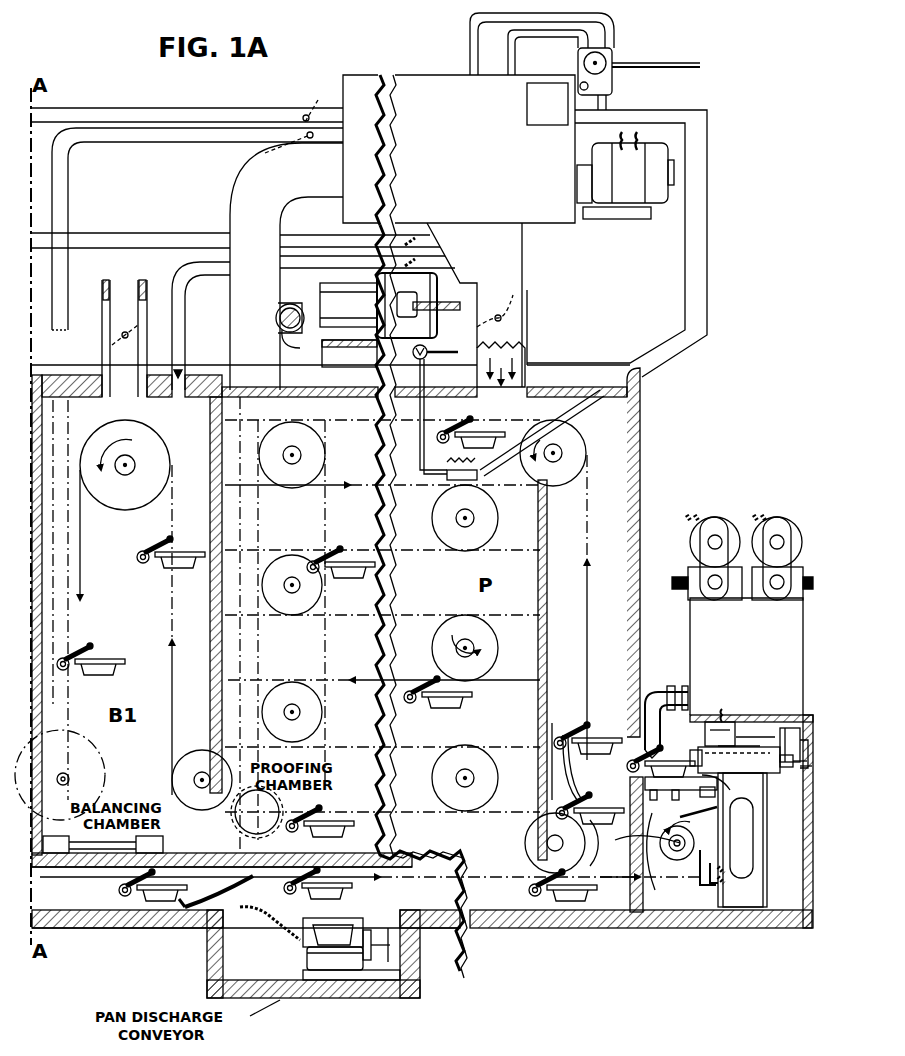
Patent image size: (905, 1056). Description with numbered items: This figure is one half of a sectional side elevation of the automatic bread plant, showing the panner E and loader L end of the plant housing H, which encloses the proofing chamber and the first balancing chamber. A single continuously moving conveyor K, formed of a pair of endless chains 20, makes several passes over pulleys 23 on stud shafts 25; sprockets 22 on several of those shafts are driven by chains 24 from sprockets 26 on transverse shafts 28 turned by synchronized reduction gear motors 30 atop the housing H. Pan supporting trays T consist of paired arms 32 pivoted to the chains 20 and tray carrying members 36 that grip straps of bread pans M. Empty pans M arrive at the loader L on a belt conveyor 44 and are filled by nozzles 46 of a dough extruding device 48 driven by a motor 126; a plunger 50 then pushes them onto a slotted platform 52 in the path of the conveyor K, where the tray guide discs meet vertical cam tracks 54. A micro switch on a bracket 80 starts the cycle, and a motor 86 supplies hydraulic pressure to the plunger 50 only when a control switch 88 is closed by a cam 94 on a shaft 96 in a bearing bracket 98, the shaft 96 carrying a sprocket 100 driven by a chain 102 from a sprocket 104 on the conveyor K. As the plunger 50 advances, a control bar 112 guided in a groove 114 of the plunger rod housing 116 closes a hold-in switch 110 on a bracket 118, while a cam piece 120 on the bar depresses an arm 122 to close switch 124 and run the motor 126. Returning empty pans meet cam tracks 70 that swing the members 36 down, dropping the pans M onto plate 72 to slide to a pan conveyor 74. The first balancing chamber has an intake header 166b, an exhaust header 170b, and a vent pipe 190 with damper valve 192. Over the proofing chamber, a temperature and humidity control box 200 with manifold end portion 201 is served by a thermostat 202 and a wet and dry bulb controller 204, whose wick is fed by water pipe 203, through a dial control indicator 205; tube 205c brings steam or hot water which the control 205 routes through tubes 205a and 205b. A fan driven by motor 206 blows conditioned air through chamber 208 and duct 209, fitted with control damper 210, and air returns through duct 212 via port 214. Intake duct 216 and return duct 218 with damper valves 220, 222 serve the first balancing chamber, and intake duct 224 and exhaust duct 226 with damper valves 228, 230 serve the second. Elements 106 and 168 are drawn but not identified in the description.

The endless chains 20 is at (80, 528).
The sprockets 22 is at (305, 486).
The pulleys 23 is at (320, 448).
The chains 24 is at (310, 525).
The stud shafts 25 is at (288, 460).
The sprockets 26 is at (280, 338).
The horizontal transverse shafts 28 is at (276, 314).
The synchronized reduction gear motors 30 is at (345, 310).
The arms 32 is at (165, 550).
The tray carrying members 36 is at (182, 568).
The belt conveyor 44 is at (635, 840).
The nozzles 46 is at (650, 712).
The dough extruding device 48 is at (712, 612).
The plunger 50 is at (690, 758).
The slotted platform 52 is at (585, 815).
The vertical cam tracks 54 is at (560, 735).
The stationary cam tracks 70 is at (205, 900).
The plate 72 is at (270, 915).
The pan conveyor 74 is at (345, 955).
The bracket 80 is at (681, 802).
The motor 86 is at (782, 528).
The control switch 88 is at (712, 890).
The cam 94 is at (766, 832).
The shaft 96 is at (679, 860).
The bearing bracket 98 is at (692, 870).
The sprocket 100 is at (664, 860).
The chain 102 is at (630, 862).
The sprocket 104 is at (545, 830).
The sprocket 106 is at (547, 843).
The hold-in switch 110 is at (790, 774).
The control bar 112 is at (712, 722).
The longitudinal groove 114 is at (722, 760).
The plunger rod housing 116 is at (767, 795).
The bracket 118 is at (790, 740).
The cam piece 120 is at (768, 728).
The switch activating arm 122 is at (745, 737).
The switch 124 is at (740, 745).
The motor 126 is at (717, 528).
The intake header 166b is at (56, 836).
The conveyor 168 is at (96, 855).
The exhaust header 170b is at (160, 846).
The vent pipe 190 is at (127, 290).
The damper control valve 192 is at (112, 340).
The temperature and humidity control box 200 is at (450, 70).
The manifold end portion 201 is at (362, 85).
The thermostat 202 is at (455, 440).
The water pipe 203 is at (424, 377).
The wet and dry bulb controller 204 is at (475, 480).
The dial control indicator 205 is at (612, 78).
The tube 205a is at (614, 13).
The tube 205b is at (590, 34).
The tube 205c is at (690, 62).
The motor 206 is at (658, 200).
The chamber 208 is at (522, 237).
The duct 209 is at (428, 350).
The control damper 210 is at (495, 302).
The duct 212 is at (240, 204).
The port 214 is at (252, 830).
The intake duct 216 is at (208, 262).
The return duct 218 is at (88, 136).
The damper valve 220 is at (445, 262).
The damper valve 222 is at (265, 153).
The intake duct 224 is at (114, 242).
The exhaust duct 226 is at (100, 112).
The damper valve 228 is at (430, 240).
The damper valve 230 is at (313, 99).
The plant housing H is at (535, 358).
The conveyor K is at (598, 505).
The pan supporting trays T is at (200, 545).
The bread pans M is at (92, 665).
The panner E is at (662, 688).
The loader L is at (757, 715).